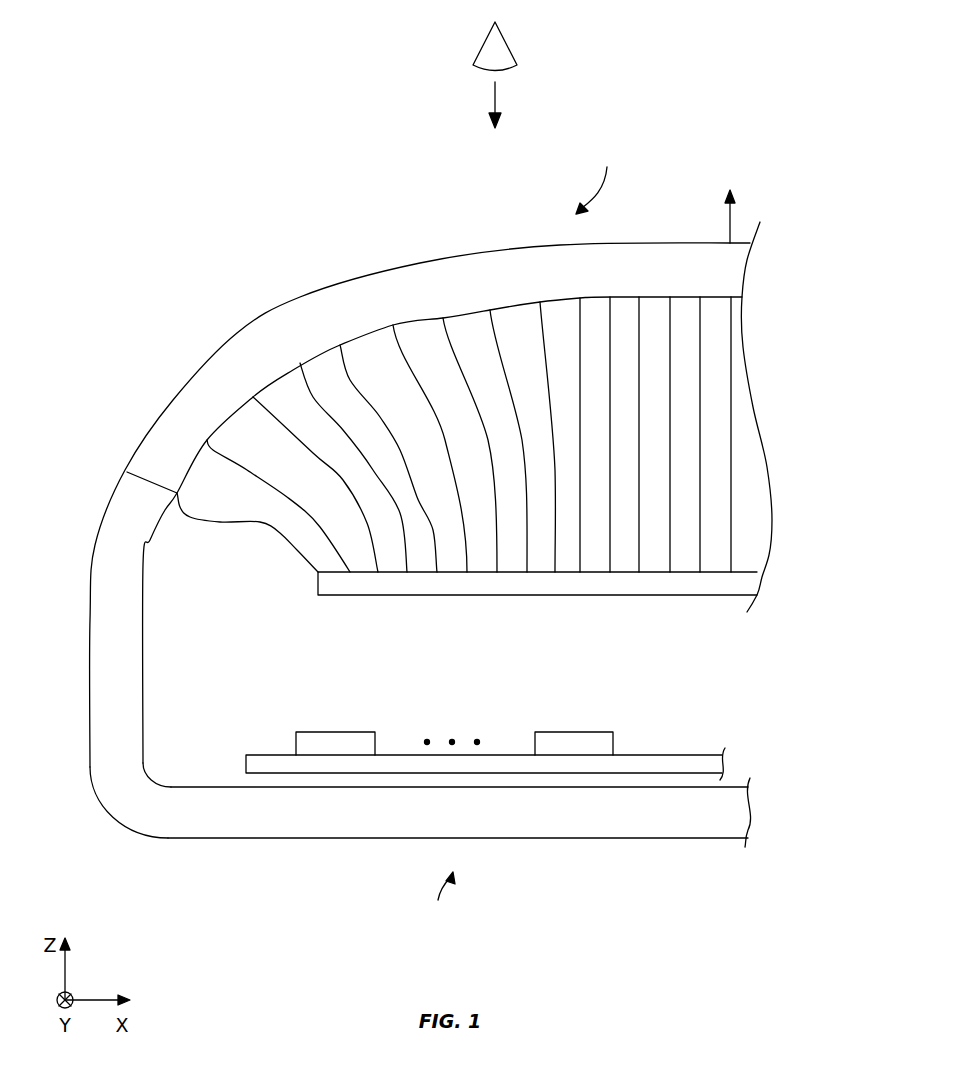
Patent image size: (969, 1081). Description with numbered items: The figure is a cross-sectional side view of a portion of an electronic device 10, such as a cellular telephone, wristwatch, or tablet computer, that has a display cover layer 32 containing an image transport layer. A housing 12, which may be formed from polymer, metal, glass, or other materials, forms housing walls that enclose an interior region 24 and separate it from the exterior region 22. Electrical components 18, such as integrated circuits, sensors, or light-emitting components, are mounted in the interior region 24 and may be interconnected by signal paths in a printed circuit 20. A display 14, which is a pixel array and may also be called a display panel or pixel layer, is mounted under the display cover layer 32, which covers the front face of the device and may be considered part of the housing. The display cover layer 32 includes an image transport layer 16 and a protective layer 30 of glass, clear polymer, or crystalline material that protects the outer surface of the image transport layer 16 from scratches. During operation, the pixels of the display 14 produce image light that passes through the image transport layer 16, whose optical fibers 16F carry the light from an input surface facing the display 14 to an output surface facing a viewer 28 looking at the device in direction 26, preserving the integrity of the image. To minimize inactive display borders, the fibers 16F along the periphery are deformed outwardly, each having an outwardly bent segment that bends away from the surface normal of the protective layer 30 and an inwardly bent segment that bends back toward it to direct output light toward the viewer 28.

The electronic device 10 is at (692, 148).
The housing 12 is at (582, 823).
The display 14 is at (708, 580).
The image transport layer 16 is at (793, 295).
The optical fibers 16F is at (292, 480).
The electrical components 18 is at (336, 745).
The printed circuit 20 is at (263, 753).
The exterior region 22 is at (226, 230).
The interior region 24 is at (195, 767).
The viewing direction 26 is at (497, 100).
The viewer 28 is at (507, 43).
The protective layer 30 is at (356, 293).
The display cover layer 32 is at (855, 242).